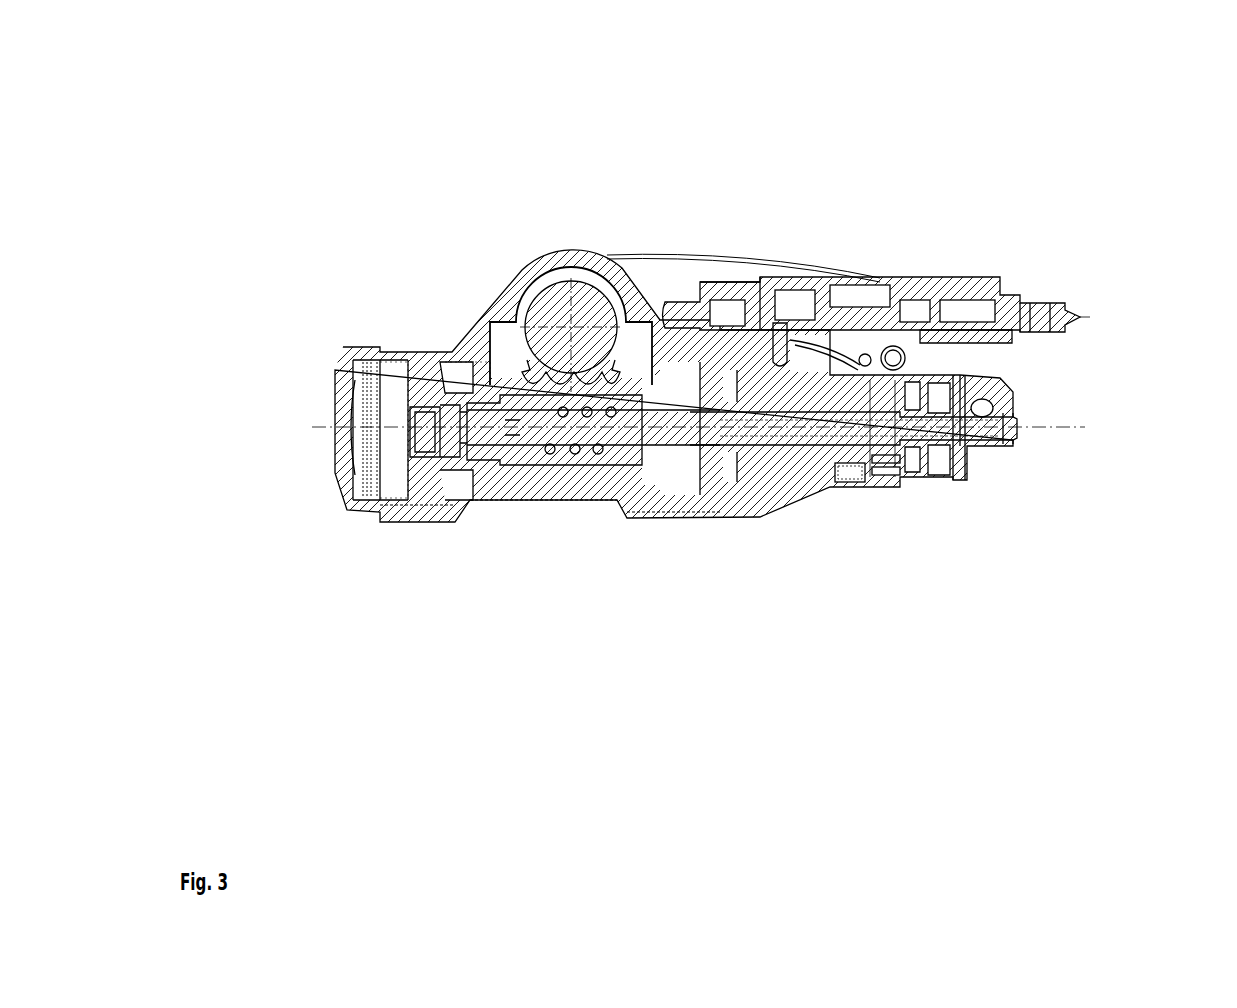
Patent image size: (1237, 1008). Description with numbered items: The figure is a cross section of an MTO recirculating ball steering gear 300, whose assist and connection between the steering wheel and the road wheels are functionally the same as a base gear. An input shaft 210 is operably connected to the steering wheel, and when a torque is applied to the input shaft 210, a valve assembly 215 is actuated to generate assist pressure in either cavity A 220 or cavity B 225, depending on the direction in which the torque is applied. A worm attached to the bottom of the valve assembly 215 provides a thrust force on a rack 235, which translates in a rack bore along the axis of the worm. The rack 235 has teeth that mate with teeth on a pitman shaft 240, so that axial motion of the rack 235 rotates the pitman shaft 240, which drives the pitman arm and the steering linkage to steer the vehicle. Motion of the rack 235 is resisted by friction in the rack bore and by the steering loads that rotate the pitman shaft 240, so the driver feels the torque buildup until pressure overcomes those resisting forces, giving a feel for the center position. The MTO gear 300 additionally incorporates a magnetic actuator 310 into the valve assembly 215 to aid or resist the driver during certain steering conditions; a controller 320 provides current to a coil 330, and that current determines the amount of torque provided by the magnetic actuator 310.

The MTO recirculating ball steering gear 300 is at (453, 105).
The pitman shaft 240 is at (545, 342).
The cavity A 220 is at (465, 365).
The cavity B 225 is at (383, 478).
The rack 235 is at (547, 388).
The input shaft 210 is at (1018, 428).
The valve assembly 215 is at (880, 480).
The magnetic actuator 310 is at (903, 485).
The controller 320 is at (982, 263).
The coil 330 is at (848, 493).